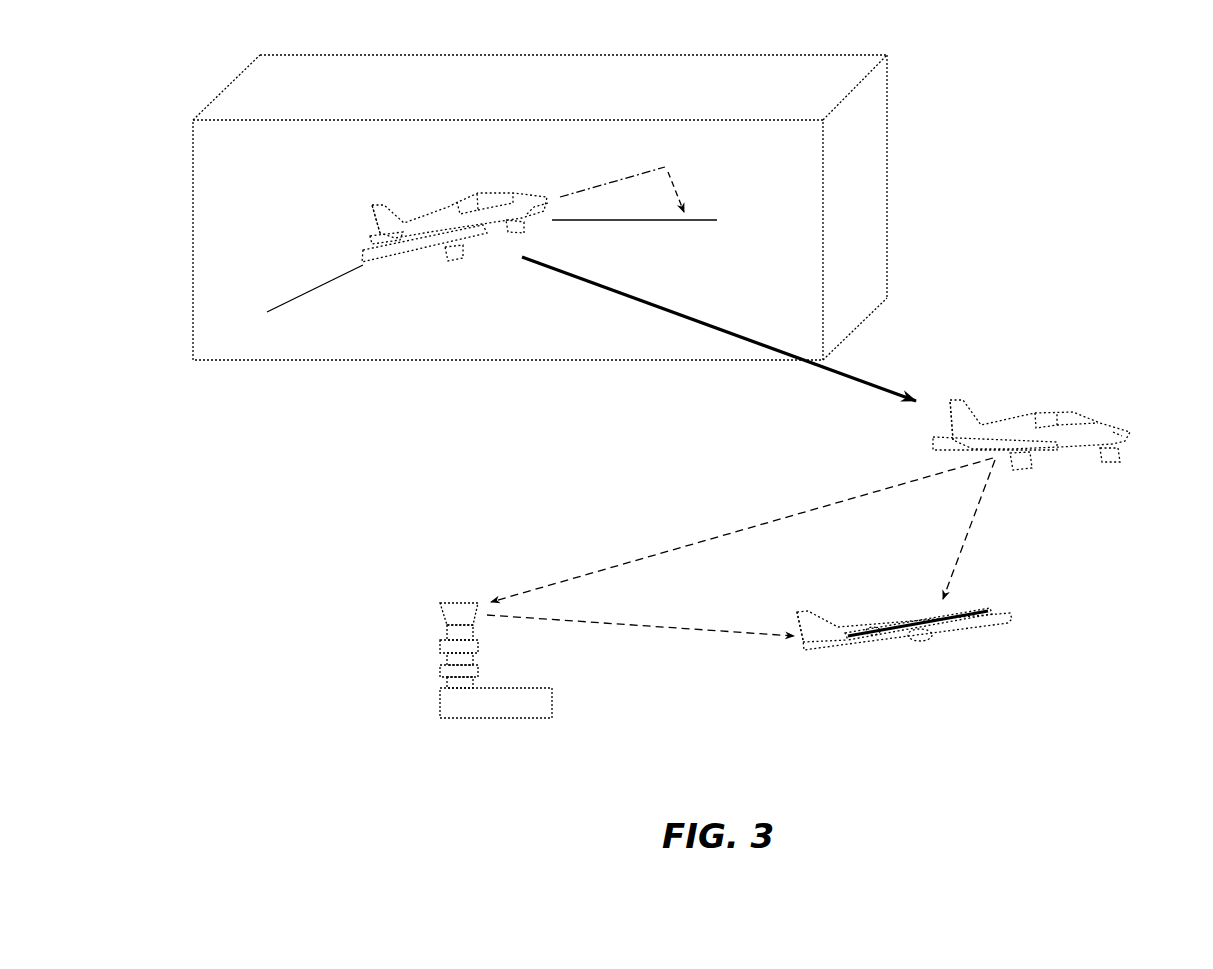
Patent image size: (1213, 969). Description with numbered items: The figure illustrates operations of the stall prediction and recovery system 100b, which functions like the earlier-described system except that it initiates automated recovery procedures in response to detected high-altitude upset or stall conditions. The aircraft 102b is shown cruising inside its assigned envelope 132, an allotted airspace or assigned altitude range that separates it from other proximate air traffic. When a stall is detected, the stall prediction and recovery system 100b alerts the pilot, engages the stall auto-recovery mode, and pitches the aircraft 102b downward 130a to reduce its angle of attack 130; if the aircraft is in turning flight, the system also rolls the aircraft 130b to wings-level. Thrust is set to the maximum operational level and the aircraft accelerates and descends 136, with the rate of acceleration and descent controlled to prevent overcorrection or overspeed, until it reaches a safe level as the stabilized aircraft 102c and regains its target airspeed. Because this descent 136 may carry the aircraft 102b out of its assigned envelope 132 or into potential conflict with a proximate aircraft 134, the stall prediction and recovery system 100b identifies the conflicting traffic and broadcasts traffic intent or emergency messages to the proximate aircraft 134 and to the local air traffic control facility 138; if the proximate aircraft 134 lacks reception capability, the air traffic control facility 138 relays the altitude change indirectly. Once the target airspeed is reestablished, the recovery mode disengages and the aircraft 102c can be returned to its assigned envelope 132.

The stall prediction and recovery system 100b is at (1207, 72).
The aircraft 102b is at (467, 196).
The aircraft at safe level 102c is at (1131, 433).
The angle of attack 130 is at (592, 207).
The downward pitch 130a is at (685, 210).
The roll to wings-level 130b is at (277, 298).
The assigned envelope 132 is at (889, 120).
The proximate aircraft 134 is at (968, 627).
The descent 136 is at (873, 372).
The air traffic control facility 138 is at (537, 688).